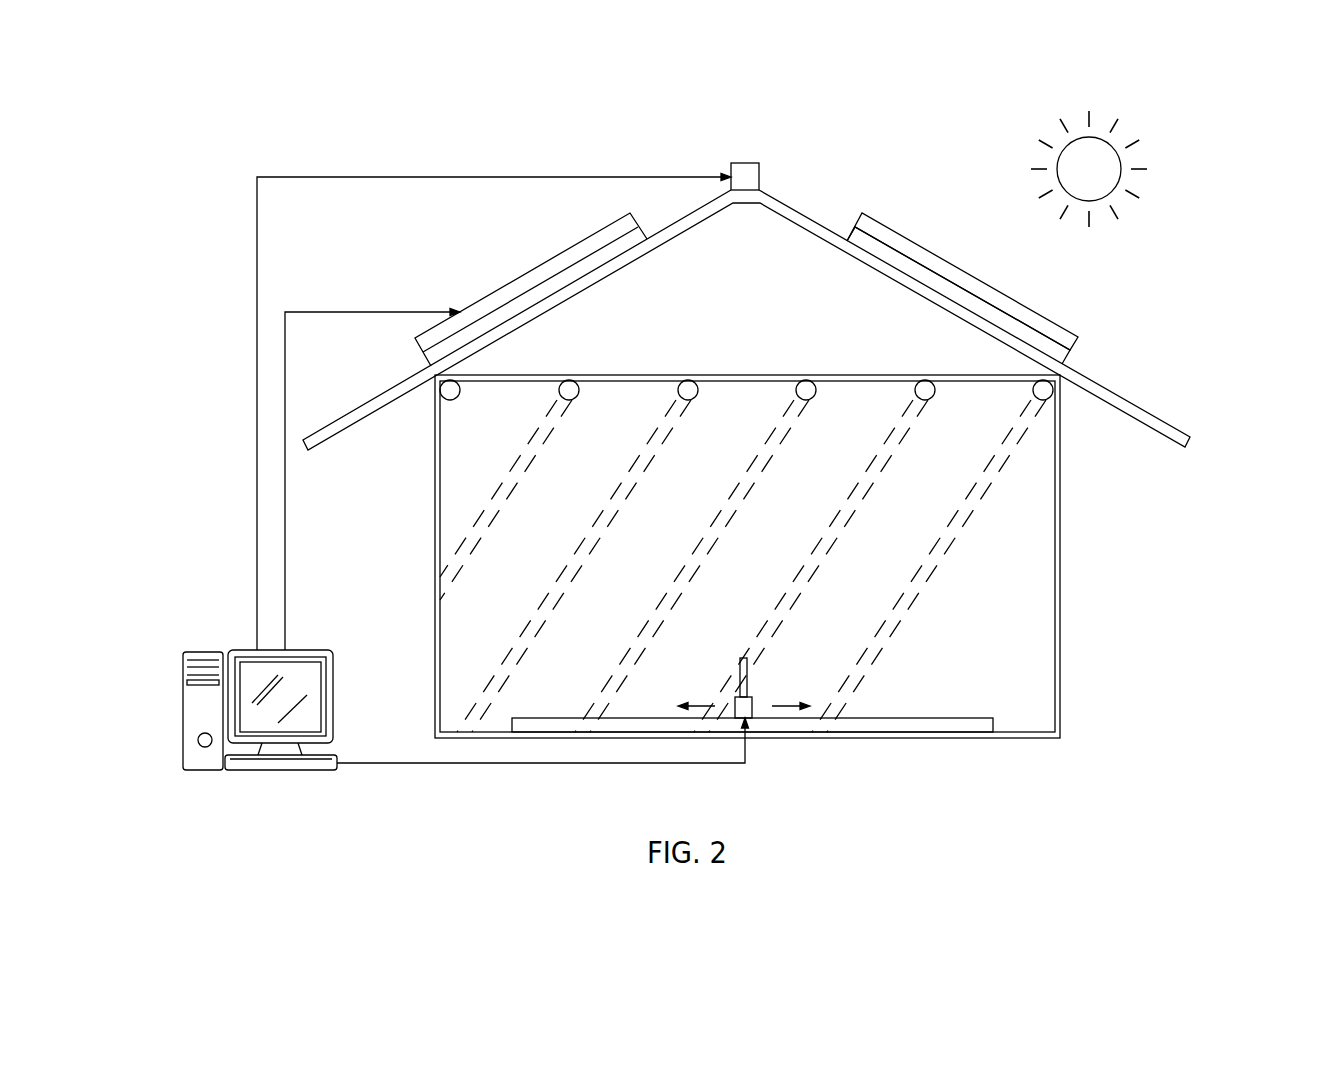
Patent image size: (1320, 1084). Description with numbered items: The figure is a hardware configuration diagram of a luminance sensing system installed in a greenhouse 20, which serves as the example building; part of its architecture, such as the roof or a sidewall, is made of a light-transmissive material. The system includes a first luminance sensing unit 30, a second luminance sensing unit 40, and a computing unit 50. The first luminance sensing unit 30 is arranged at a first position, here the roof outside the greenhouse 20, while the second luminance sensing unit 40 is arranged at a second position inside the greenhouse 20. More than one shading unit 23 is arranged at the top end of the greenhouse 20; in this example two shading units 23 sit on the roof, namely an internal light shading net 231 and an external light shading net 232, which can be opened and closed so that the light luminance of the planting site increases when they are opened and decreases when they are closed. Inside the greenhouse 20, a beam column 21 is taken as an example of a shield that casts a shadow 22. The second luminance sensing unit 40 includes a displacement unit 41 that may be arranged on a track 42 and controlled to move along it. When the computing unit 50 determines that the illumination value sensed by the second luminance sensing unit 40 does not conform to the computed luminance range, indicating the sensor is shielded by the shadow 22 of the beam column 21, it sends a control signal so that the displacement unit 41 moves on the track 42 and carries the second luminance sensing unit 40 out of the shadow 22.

The greenhouse 20 is at (1117, 515).
The beam column 21 is at (806, 381).
The shadow 22 is at (768, 440).
The shading unit 23 is at (520, 262).
The internal light shading net 231 is at (1052, 353).
The external light shading net 232 is at (1060, 324).
The first luminance sensing unit 30 is at (747, 170).
The second luminance sensing unit 40 is at (742, 662).
The displacement unit 41 is at (755, 700).
The track 42 is at (905, 718).
The computing unit 50 is at (242, 650).